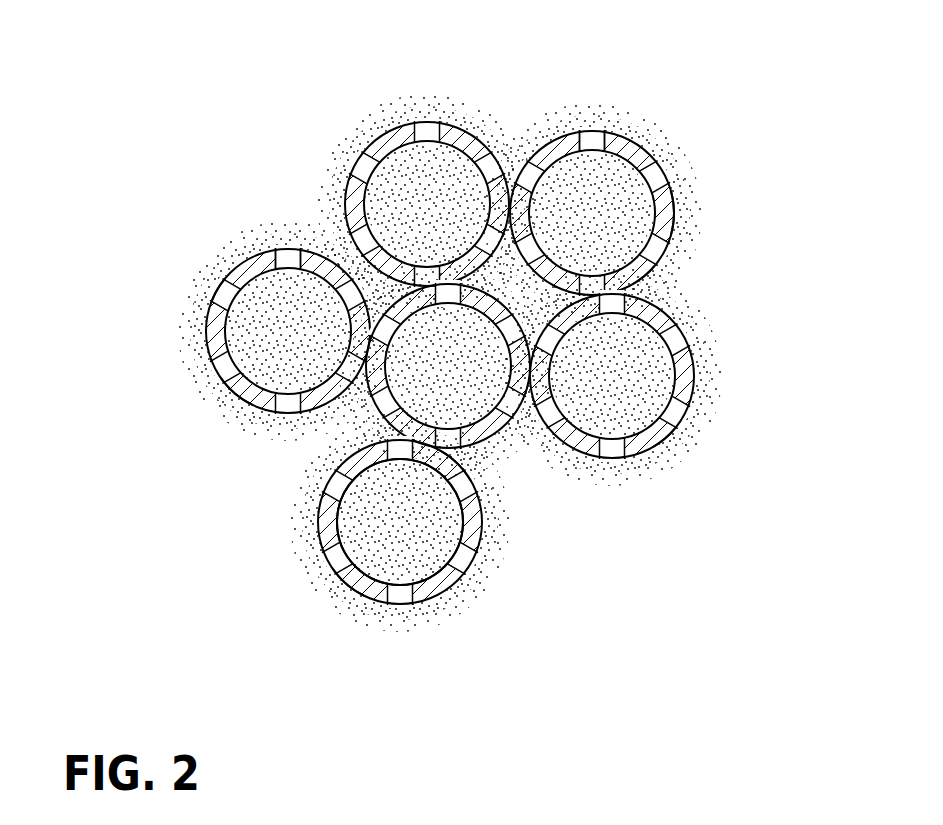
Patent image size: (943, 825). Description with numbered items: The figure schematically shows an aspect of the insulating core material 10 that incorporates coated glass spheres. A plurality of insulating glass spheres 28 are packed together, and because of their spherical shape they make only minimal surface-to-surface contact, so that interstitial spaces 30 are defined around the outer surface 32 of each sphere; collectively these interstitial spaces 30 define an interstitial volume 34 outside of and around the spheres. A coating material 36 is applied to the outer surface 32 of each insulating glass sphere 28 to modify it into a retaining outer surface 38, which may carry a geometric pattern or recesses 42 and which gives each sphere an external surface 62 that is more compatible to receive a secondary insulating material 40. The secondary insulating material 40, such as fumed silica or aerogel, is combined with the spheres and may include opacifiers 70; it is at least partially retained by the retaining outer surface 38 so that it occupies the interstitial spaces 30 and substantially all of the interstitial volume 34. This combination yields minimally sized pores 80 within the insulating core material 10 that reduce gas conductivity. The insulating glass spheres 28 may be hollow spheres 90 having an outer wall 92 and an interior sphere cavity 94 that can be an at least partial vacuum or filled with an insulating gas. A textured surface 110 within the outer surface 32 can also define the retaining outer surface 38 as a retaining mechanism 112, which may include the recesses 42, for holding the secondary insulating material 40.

The insulating core material 10 is at (266, 144).
The insulating glass spheres 28 is at (671, 203).
The interstitial spaces 30 is at (529, 413).
The outer surface 32 is at (693, 381).
The interstitial volume 34 is at (263, 485).
The coating material 36 is at (646, 142).
The retaining outer surface 38 is at (204, 327).
The secondary insulating material 40 is at (498, 460).
The recesses 42 is at (596, 131).
The external surface 62 is at (274, 247).
The opacifiers 70 is at (423, 107).
The pores 80 is at (663, 272).
The hollow spheres 90 is at (247, 390).
The outer wall 92 is at (357, 578).
The interior sphere cavity 94 is at (401, 546).
The textured surface 110 is at (640, 452).
The retaining mechanism 112 is at (210, 276).